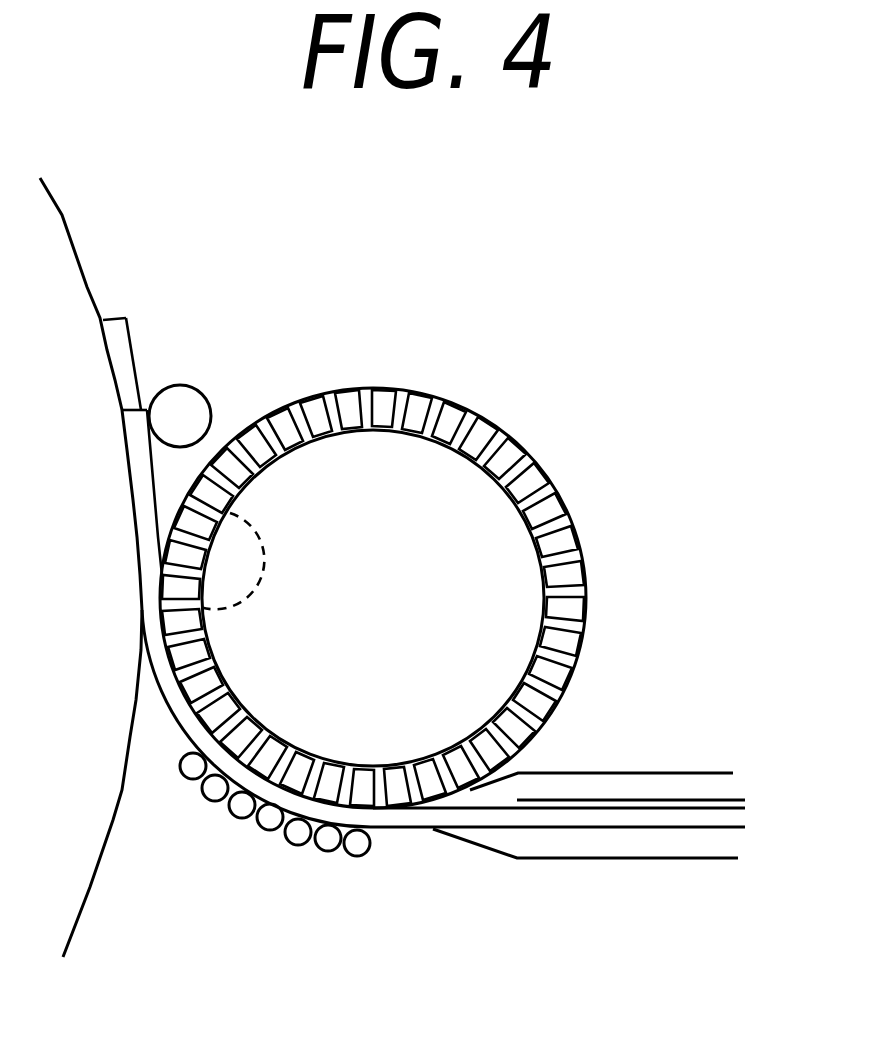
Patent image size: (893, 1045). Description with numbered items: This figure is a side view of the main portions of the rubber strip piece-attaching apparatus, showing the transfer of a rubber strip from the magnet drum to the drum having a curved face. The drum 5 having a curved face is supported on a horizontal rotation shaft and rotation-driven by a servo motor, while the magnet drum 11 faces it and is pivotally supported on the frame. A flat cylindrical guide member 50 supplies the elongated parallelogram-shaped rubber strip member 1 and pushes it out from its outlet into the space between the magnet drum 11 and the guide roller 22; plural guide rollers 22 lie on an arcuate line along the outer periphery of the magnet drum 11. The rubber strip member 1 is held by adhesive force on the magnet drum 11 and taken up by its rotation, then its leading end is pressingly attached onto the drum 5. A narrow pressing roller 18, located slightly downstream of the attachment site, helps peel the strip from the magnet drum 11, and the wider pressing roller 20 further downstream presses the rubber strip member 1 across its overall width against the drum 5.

The drum having a curved face 5 is at (65, 215).
The rubber strip member 1 is at (133, 393).
The pressing roller 20 is at (206, 402).
The magnet drum 11 is at (447, 397).
The pressing roller 18 is at (240, 500).
The guide member 50 is at (693, 773).
The guide rollers 22 is at (296, 832).